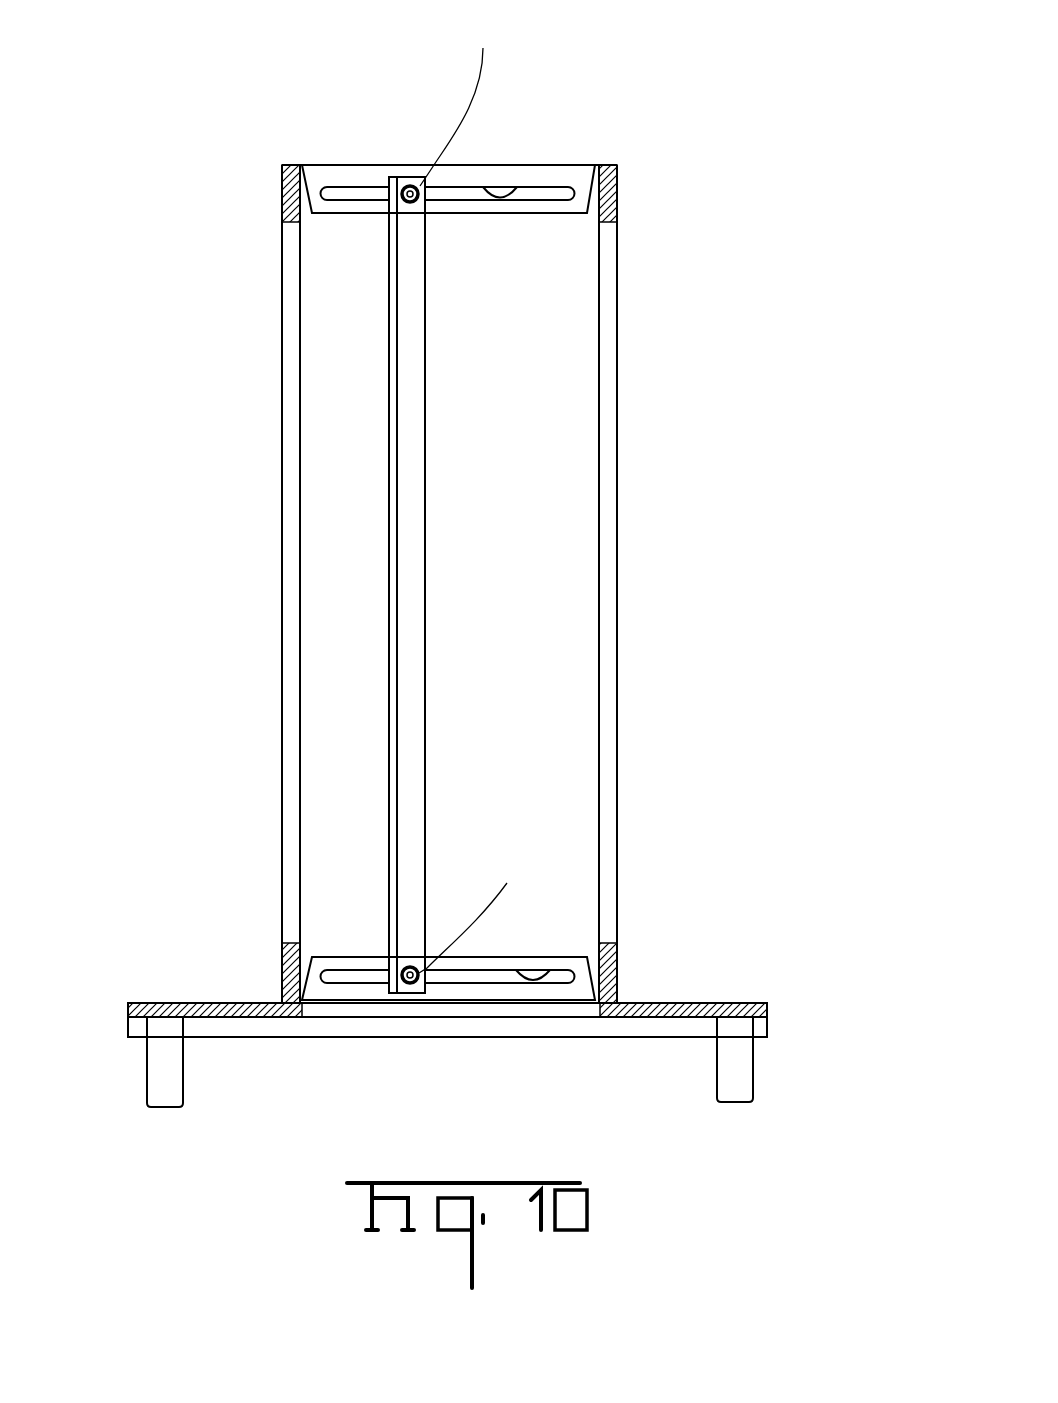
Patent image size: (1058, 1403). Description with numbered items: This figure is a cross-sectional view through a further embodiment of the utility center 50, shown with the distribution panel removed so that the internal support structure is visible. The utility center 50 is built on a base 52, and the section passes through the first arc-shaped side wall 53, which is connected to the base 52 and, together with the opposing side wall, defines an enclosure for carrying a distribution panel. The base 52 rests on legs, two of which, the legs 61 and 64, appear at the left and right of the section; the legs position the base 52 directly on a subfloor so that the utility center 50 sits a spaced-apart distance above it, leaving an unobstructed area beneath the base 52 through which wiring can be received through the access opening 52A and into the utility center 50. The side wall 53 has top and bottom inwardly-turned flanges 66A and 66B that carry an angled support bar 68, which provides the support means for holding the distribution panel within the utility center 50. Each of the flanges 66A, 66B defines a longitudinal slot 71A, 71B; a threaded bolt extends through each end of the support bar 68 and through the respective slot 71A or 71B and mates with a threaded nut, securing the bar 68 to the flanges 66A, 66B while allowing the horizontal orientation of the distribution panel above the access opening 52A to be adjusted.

The utility center 50 is at (238, 273).
The base 52 is at (230, 1003).
The access opening 52A is at (598, 1005).
The first arc-shaped side wall 53 is at (537, 572).
The leg 61 is at (165, 1078).
The leg 64 is at (742, 1078).
The top inwardly-turned flange 66A is at (587, 193).
The bottom inwardly-turned flange 66B is at (582, 987).
The angled support bar 68 is at (415, 352).
The longitudinal slot 71A is at (516, 188).
The longitudinal slot 71B is at (558, 968).